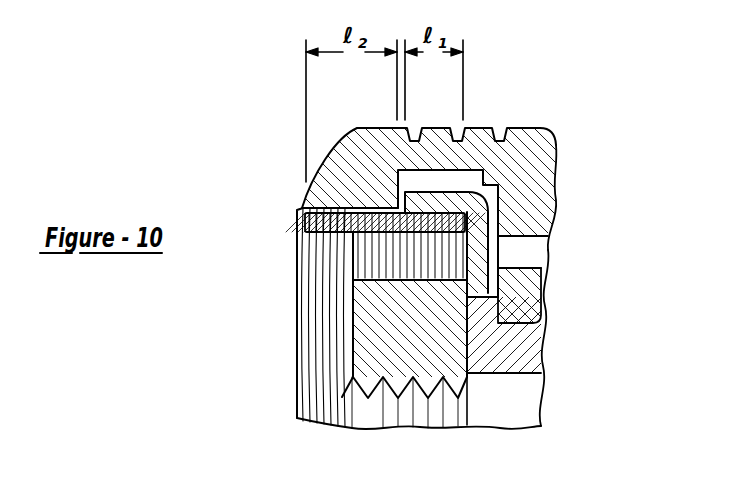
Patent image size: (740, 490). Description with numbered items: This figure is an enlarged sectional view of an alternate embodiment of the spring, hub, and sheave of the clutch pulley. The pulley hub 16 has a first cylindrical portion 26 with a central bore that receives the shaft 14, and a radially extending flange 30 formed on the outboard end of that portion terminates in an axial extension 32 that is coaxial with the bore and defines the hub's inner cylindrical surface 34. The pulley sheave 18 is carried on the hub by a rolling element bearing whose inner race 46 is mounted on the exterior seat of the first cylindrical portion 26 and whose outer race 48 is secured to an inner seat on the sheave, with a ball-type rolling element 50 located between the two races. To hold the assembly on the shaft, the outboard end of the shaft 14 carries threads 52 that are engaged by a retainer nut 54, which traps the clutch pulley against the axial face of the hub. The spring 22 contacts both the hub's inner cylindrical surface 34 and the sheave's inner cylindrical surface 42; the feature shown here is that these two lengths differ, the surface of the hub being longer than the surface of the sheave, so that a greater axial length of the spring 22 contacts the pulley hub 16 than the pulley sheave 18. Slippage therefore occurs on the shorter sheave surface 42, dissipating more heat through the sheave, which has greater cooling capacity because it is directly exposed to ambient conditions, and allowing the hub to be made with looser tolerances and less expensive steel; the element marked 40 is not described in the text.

The shaft 14 is at (507, 401).
The pulley hub 16 is at (507, 366).
The pulley sheave 18 is at (475, 133).
The spring 22 is at (330, 268).
The first cylindrical portion 26 is at (520, 345).
The flange 30 is at (477, 243).
The axial extension 32 is at (454, 195).
The inner cylindrical surface 34 is at (454, 195).
The nut flange 40 is at (348, 180).
The inner cylindrical surface 42 is at (362, 242).
The inner race 46 is at (517, 307).
The outer race 48 is at (556, 197).
The rolling element 50 is at (550, 233).
The threads 52 is at (437, 413).
The retainer nut 54 is at (370, 331).